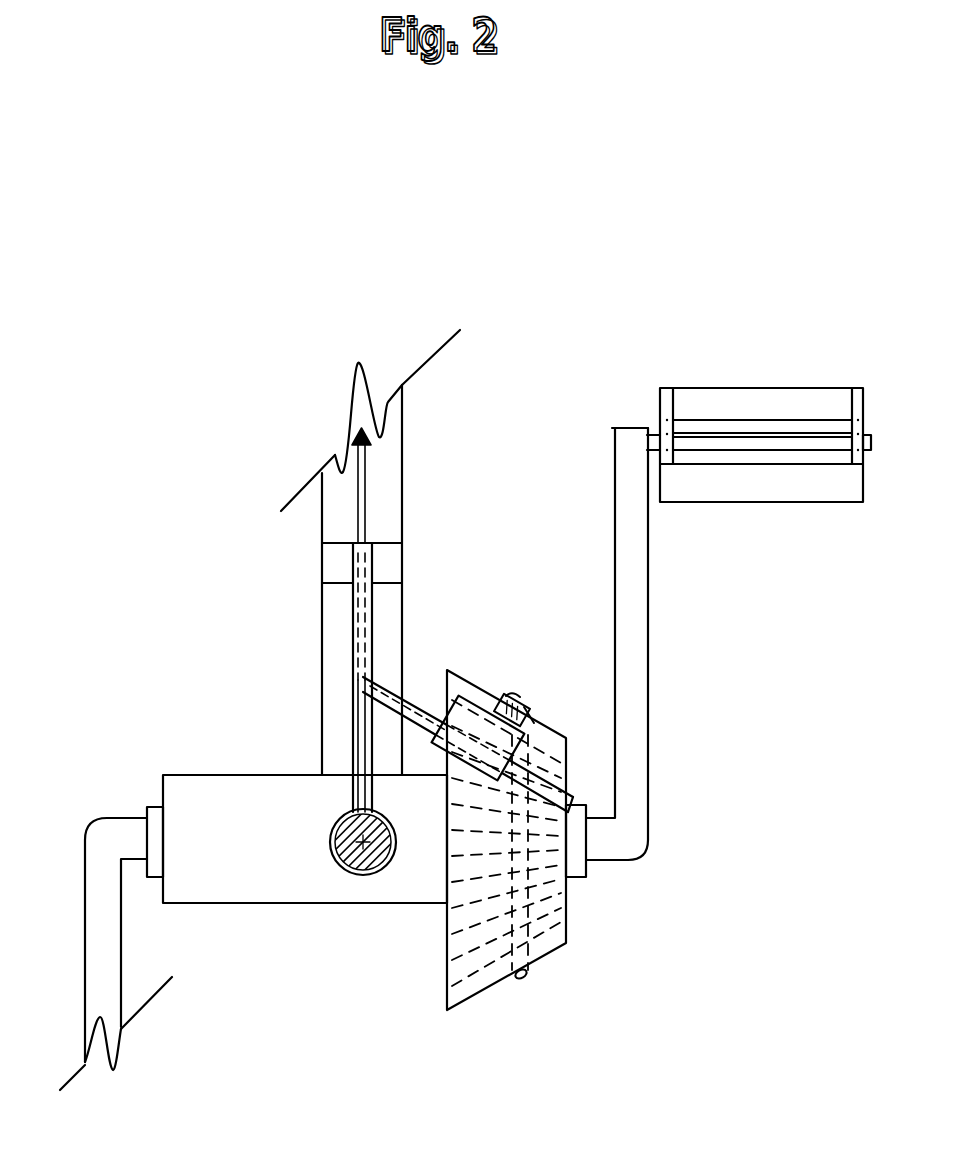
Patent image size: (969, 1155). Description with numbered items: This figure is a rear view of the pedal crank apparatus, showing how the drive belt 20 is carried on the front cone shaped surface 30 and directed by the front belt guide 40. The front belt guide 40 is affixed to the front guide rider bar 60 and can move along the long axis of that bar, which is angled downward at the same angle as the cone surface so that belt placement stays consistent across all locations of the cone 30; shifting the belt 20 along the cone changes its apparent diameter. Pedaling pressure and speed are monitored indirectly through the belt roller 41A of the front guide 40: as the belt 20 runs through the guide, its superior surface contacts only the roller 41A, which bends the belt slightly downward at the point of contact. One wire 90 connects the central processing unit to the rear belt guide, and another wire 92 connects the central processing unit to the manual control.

The drive belt 20 is at (520, 700).
The front cone shaped surface 30 is at (545, 915).
The front belt guide 40 is at (467, 710).
The belt roller 41A is at (538, 716).
The front guide rider bar 60 is at (580, 800).
The wire 90 is at (365, 708).
The wire 92 is at (363, 627).